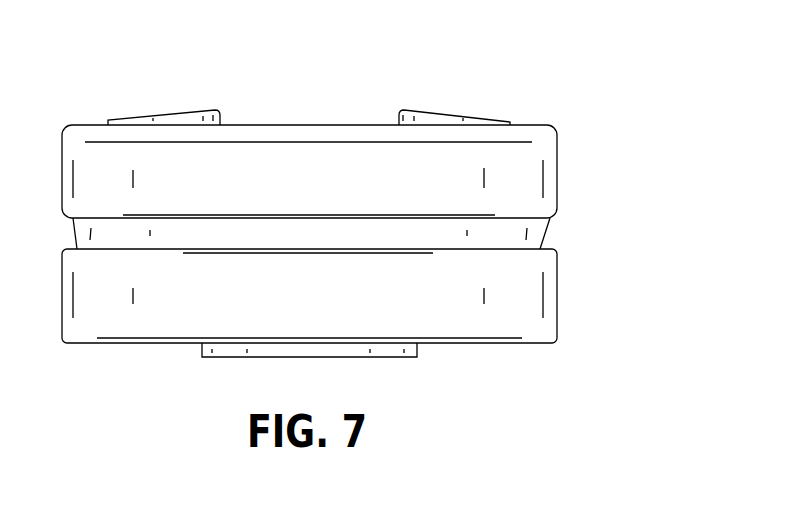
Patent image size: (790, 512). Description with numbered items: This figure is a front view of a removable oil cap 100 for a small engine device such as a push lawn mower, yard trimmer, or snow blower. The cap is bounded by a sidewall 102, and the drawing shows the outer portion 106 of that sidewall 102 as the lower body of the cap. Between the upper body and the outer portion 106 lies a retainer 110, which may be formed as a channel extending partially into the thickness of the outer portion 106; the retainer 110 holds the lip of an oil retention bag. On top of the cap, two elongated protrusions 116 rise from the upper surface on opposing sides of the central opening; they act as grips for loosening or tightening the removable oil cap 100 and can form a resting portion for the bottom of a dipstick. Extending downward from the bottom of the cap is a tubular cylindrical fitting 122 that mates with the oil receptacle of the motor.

The removable oil cap 100 is at (582, 68).
The sidewall 102 is at (565, 178).
The outer portion 106 is at (528, 296).
The retainer 110 is at (533, 233).
The elongated protrusions 116 is at (177, 113).
The tubular cylindrical fitting 122 is at (387, 350).